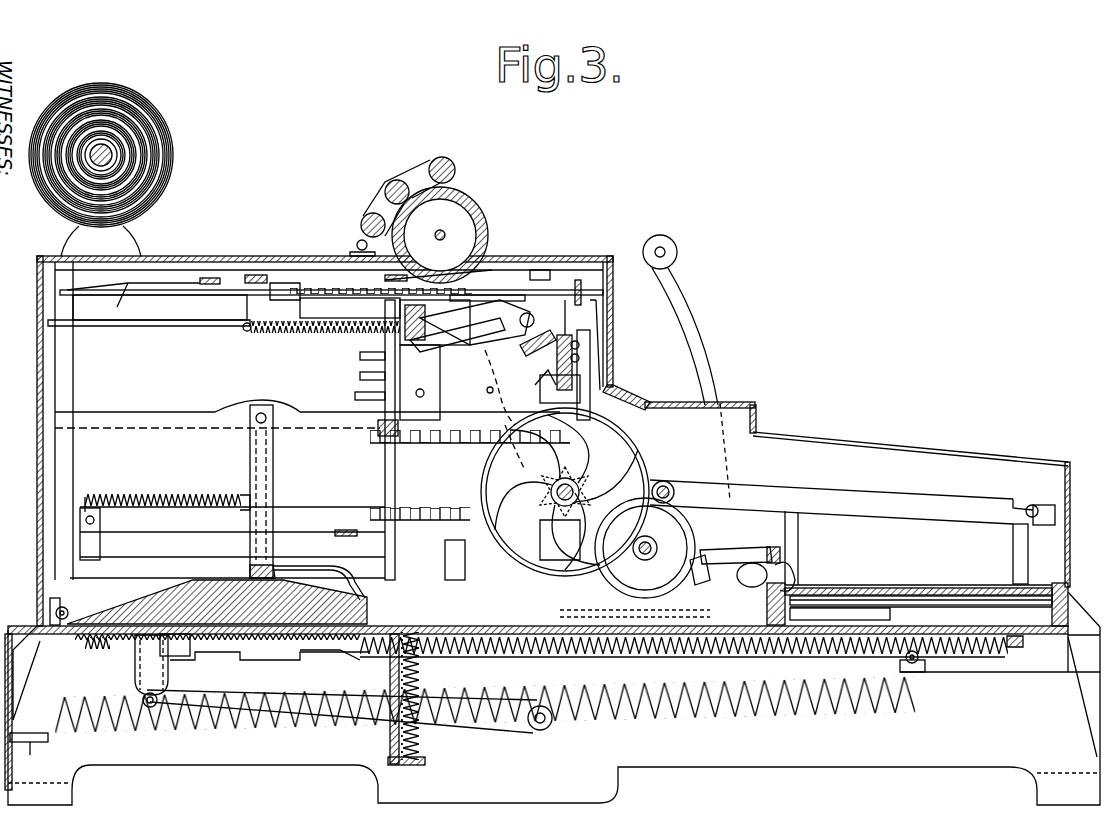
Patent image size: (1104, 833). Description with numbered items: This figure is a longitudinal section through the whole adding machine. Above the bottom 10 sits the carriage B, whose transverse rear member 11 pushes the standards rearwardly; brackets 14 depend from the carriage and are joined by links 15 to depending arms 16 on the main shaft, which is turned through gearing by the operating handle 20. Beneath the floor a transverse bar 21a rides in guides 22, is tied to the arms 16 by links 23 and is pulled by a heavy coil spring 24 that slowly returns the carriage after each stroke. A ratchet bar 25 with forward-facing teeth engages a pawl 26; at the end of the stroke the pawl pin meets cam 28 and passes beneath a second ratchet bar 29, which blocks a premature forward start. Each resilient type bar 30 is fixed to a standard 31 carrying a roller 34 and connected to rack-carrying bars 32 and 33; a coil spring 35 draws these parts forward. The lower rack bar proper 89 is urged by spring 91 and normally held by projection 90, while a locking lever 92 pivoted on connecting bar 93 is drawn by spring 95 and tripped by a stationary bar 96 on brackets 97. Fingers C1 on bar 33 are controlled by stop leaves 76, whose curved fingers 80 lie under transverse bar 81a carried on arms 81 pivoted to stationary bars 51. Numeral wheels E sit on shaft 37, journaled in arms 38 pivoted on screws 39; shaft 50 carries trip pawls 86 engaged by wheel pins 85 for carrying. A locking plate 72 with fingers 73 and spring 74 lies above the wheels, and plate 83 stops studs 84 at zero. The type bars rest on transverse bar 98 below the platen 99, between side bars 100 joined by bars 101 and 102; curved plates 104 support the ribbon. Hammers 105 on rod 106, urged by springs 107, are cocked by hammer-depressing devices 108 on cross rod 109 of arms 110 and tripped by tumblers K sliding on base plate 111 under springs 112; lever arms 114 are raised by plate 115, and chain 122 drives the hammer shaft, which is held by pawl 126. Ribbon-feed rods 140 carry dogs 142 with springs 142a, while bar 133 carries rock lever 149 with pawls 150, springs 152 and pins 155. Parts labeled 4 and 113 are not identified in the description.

The casing wall 4 is at (40, 412).
The bottom 10 is at (35, 620).
The rear member 11 is at (90, 612).
The brackets 14 is at (143, 700).
The links 15 is at (490, 728).
The depending arms 16 is at (546, 708).
The operating handle 20 is at (708, 340).
The transversely-extending bar 21a is at (910, 680).
The guides 22 is at (1000, 674).
The links 23 is at (820, 655).
The coil spring 24 is at (638, 715).
The ratchet bar 25 is at (165, 620).
The pawl 26 is at (135, 665).
The cam 28 is at (317, 655).
The second ratchet bar 29 is at (255, 655).
The type bars 30 is at (150, 295).
The standard 31 is at (73, 368).
The rack-carrying bar 32 is at (185, 412).
The rack-carrying bar 33 is at (227, 556).
The roller 34 is at (40, 600).
The coil spring 35 is at (640, 650).
The shaft 37 is at (572, 488).
The arms 38 is at (857, 514).
The stud or screw 39 is at (1032, 504).
The shaft 50 is at (668, 485).
The bars 51 is at (700, 572).
The locking plate 72 is at (595, 375).
The depending fingers 73 is at (648, 394).
The spring 74 is at (592, 345).
The stop leaf 76 is at (985, 600).
The curved finger 80 is at (770, 585).
The arms 81 is at (745, 555).
The transverse bar 81a is at (782, 562).
The transverse plate 83 is at (540, 385).
The stud or projection 84 is at (540, 395).
The pin 85 is at (546, 554).
The trip pawls 86 is at (645, 548).
The lower rack bar 89 is at (312, 510).
The projection 90 is at (346, 530).
The spring 91 is at (175, 495).
The locking lever 92 is at (250, 570).
The connecting bar 93 is at (258, 438).
The spring 95 is at (250, 485).
The transverse bar 96 is at (250, 560).
The brackets 97 is at (335, 570).
The transverse bar 98 is at (490, 270).
The platen 99 is at (482, 215).
The side bars 100 is at (625, 292).
The transverse bar 101 is at (560, 250).
The bar 102 is at (210, 278).
The curved plates 104 is at (358, 244).
The hammers 105 is at (493, 284).
The transverse rod 106 is at (498, 322).
The springs 107 is at (537, 347).
The hammer-depressing devices 108 is at (350, 306).
The cross rod 109 is at (440, 343).
The arms 110 is at (457, 335).
The base plate 111 is at (268, 340).
The spring 112 is at (303, 340).
The block 113 is at (275, 293).
The lever arm 114 is at (507, 387).
The plate 115 is at (503, 385).
The chain 122 is at (490, 420).
The pivoted plate 126 is at (592, 318).
The transverse bar 133 is at (378, 436).
The vertically-reciprocating rods 140 is at (385, 468).
The dog 142 is at (405, 410).
The spring 142a is at (400, 492).
The rock lever 149 is at (361, 398).
The pawl 150 is at (359, 376).
The spring 152 is at (360, 359).
The pin 155 is at (424, 393).
The carriage B is at (161, 567).
The fingers C1 is at (468, 560).
The numeral wheels E is at (630, 455).
The tumblers K is at (292, 293).